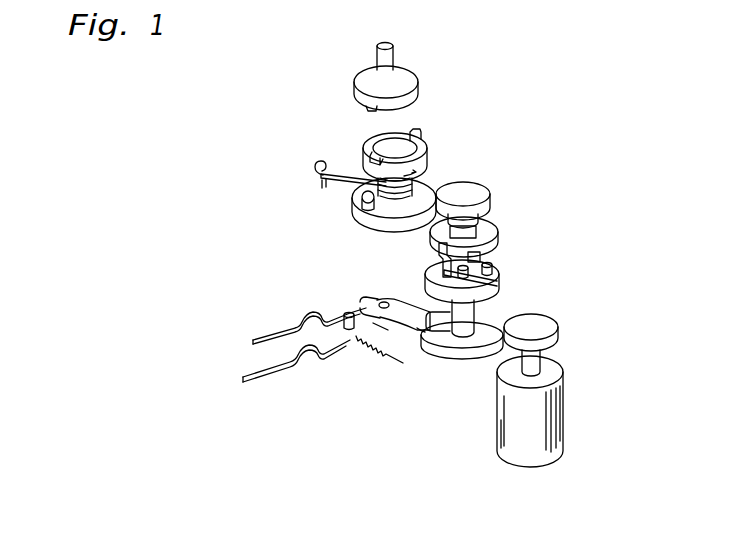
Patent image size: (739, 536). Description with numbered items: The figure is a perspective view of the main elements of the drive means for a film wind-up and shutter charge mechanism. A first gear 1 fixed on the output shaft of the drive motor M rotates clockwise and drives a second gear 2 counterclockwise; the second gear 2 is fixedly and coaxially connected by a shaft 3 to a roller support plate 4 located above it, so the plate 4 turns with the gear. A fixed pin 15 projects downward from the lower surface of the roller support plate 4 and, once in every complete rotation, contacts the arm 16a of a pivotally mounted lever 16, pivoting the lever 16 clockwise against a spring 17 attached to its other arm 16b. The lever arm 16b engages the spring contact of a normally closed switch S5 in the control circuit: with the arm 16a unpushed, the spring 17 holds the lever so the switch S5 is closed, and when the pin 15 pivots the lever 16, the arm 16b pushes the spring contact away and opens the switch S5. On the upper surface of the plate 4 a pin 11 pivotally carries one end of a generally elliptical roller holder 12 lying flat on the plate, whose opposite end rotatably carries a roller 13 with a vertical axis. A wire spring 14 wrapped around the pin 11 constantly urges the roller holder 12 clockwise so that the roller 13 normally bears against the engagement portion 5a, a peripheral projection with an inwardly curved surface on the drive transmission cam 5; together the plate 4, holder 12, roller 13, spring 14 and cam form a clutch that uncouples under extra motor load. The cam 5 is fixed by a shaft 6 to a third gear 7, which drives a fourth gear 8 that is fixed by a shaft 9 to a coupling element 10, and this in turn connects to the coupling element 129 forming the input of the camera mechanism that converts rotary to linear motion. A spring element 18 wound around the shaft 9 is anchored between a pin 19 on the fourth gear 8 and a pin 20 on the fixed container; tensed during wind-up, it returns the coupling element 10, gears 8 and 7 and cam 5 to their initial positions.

The coupling element 129 is at (419, 86).
The coupling element 10 is at (378, 134).
The shaft 9 is at (428, 180).
The fourth gear 8 is at (357, 196).
The pin 19 is at (362, 206).
The pin 20 is at (318, 170).
The spring element 18 is at (346, 180).
The third gear 7 is at (474, 192).
The shaft 6 is at (482, 212).
The drive transmission cam 5 is at (490, 233).
The engagement portion 5a is at (482, 257).
The pin 11 is at (494, 275).
The roller support plate 4 is at (500, 292).
The wire spring 14 is at (443, 274).
The roller 13 is at (438, 252).
The shaft 3 is at (478, 322).
The fixed pin 15 is at (451, 340).
The second gear 2 is at (490, 338).
The first gear 1 is at (548, 330).
The drive motor M is at (560, 416).
The roller holder 12 is at (380, 299).
The lever 16 is at (356, 304).
The lever arm 16b is at (345, 338).
The lever arm 16a is at (420, 333).
The spring 17 is at (368, 348).
The normally closed switch S5 is at (290, 349).